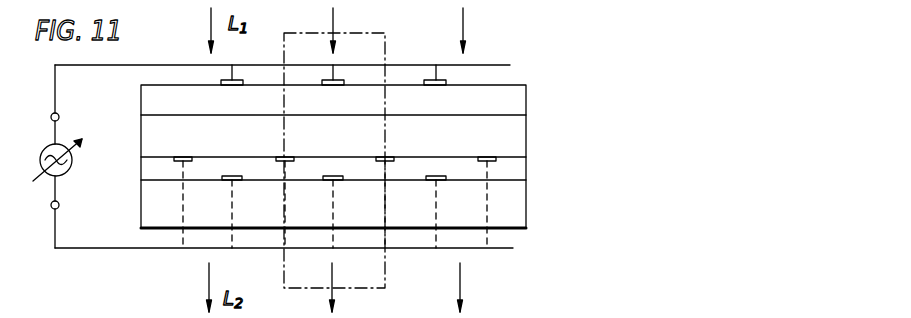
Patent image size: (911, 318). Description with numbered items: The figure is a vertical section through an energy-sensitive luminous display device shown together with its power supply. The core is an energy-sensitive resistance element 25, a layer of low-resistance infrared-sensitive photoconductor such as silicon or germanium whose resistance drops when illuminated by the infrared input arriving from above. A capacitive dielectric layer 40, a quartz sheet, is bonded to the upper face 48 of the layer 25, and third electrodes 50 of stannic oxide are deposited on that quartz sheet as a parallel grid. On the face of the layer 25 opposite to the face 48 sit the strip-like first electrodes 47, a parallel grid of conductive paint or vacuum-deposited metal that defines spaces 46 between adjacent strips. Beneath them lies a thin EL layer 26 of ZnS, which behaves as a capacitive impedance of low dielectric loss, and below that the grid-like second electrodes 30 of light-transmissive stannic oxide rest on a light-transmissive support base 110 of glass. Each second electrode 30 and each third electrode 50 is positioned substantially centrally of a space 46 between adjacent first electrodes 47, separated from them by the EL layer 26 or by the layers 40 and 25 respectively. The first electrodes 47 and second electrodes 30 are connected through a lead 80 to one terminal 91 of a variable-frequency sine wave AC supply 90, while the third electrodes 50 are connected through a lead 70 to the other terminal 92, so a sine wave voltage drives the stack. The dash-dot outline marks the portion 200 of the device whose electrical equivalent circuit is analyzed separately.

The lead 70 is at (170, 65).
The lead 80 is at (100, 248).
The source of sine wave AC supply 90 is at (72, 162).
The terminal 91 is at (59, 206).
The terminal 92 is at (59, 116).
The portion of the device 200 is at (380, 55).
The capacitive dielectric layer 40 is at (523, 87).
The face 48 is at (516, 92).
The energy-sensitive resistance element 25 is at (519, 110).
The spaces 46 is at (523, 128).
The first electrodes 47 is at (497, 161).
The EL layer 26 is at (513, 172).
The second electrodes 30 is at (441, 175).
The support base 110 is at (513, 217).
The third electrodes 50 is at (446, 82).